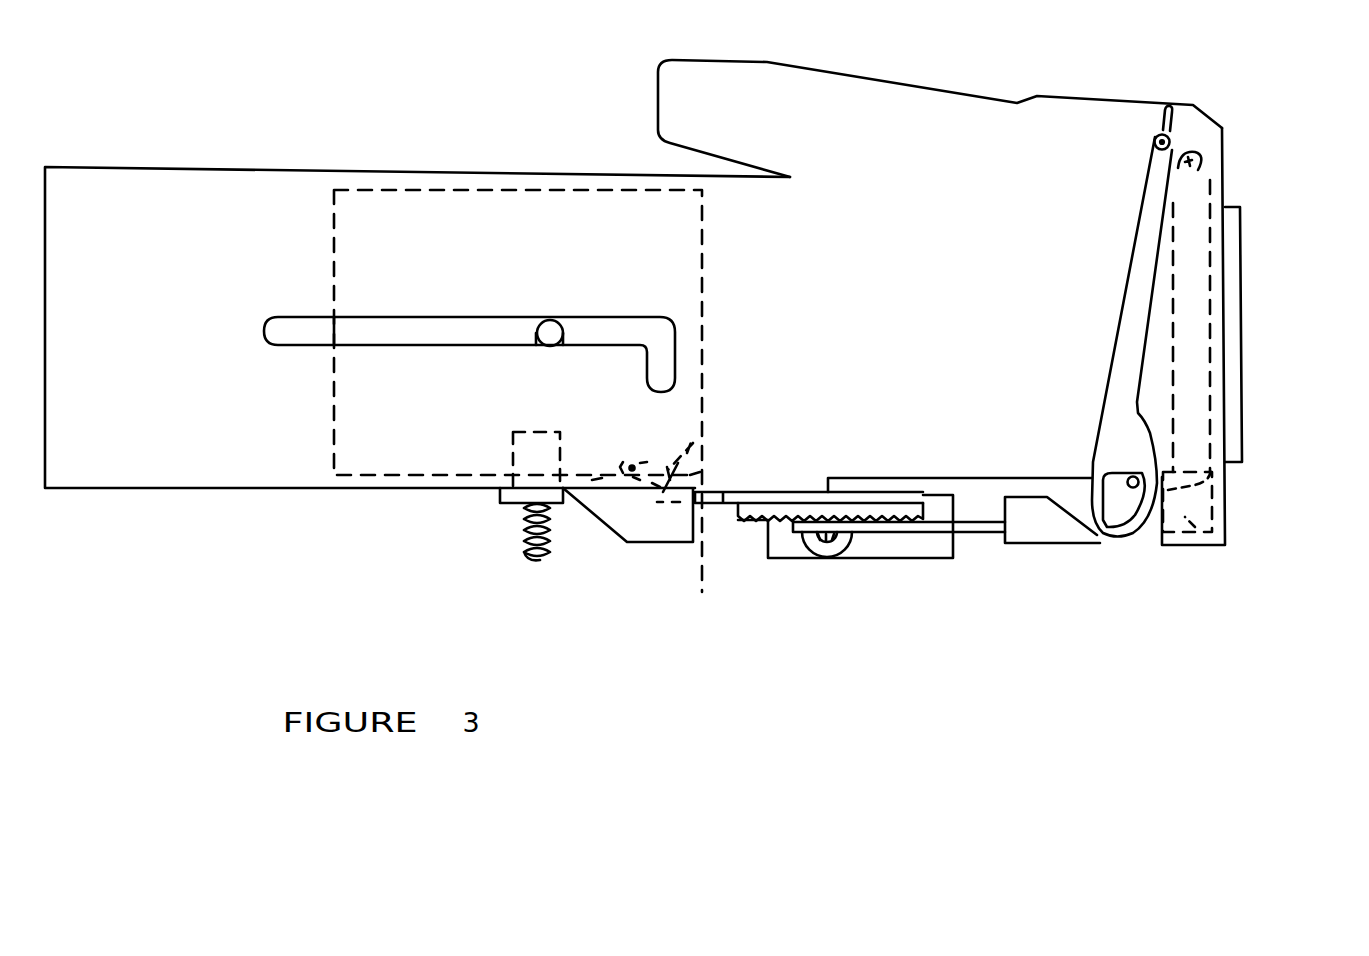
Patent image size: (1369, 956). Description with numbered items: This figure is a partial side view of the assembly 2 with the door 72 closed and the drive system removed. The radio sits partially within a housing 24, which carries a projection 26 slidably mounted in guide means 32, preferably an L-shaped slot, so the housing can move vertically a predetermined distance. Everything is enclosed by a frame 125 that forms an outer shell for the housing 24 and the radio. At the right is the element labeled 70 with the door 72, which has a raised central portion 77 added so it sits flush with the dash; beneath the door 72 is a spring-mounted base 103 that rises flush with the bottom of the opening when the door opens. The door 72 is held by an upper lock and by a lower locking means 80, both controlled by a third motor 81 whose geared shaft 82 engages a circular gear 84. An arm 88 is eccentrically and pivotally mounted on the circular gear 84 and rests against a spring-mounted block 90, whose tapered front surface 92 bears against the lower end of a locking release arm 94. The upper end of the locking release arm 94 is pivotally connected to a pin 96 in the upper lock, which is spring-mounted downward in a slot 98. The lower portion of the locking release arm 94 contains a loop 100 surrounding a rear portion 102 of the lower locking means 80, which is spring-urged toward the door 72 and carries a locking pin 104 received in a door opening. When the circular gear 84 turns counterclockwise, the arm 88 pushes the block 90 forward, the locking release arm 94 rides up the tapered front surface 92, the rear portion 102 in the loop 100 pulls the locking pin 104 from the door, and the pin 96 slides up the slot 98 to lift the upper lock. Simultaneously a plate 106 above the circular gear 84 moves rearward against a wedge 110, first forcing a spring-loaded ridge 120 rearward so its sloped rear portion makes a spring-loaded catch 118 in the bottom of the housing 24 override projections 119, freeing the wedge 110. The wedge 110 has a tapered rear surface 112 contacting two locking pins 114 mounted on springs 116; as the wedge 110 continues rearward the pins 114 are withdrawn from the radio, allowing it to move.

The stapler housing 2 is at (299, 150).
The housing 24 is at (399, 186).
The projection 26 is at (550, 335).
The guide means 32 is at (616, 333).
The frame 125 is at (727, 60).
The anvil housing 70 is at (1222, 148).
The door 72 is at (1187, 262).
The raised central portion 77 is at (1230, 290).
The locking release arm 94 is at (1138, 260).
The pin 96 is at (1155, 142).
The slot 98 is at (1167, 105).
The tapered front surface 92 is at (1097, 533).
The loop 100 is at (1105, 508).
The rear portion 102 is at (1135, 490).
The locking pin 104 is at (1240, 468).
The lower locking means 80 is at (1170, 490).
The spring-mounted base 103 is at (1215, 553).
The block 90 is at (1048, 523).
The arm 88 is at (973, 532).
The third motor 81 is at (912, 545).
The geared shaft 82 is at (827, 545).
The circular gear 84 is at (905, 514).
The plate 106 is at (850, 500).
The wedge 110 is at (643, 527).
The tapered rear surface 112 is at (603, 523).
The locking pins 114 is at (513, 440).
The springs 116 is at (543, 552).
The spring-loaded catch 118 is at (647, 450).
The projections 119 is at (705, 425).
The ridge 120 is at (700, 608).